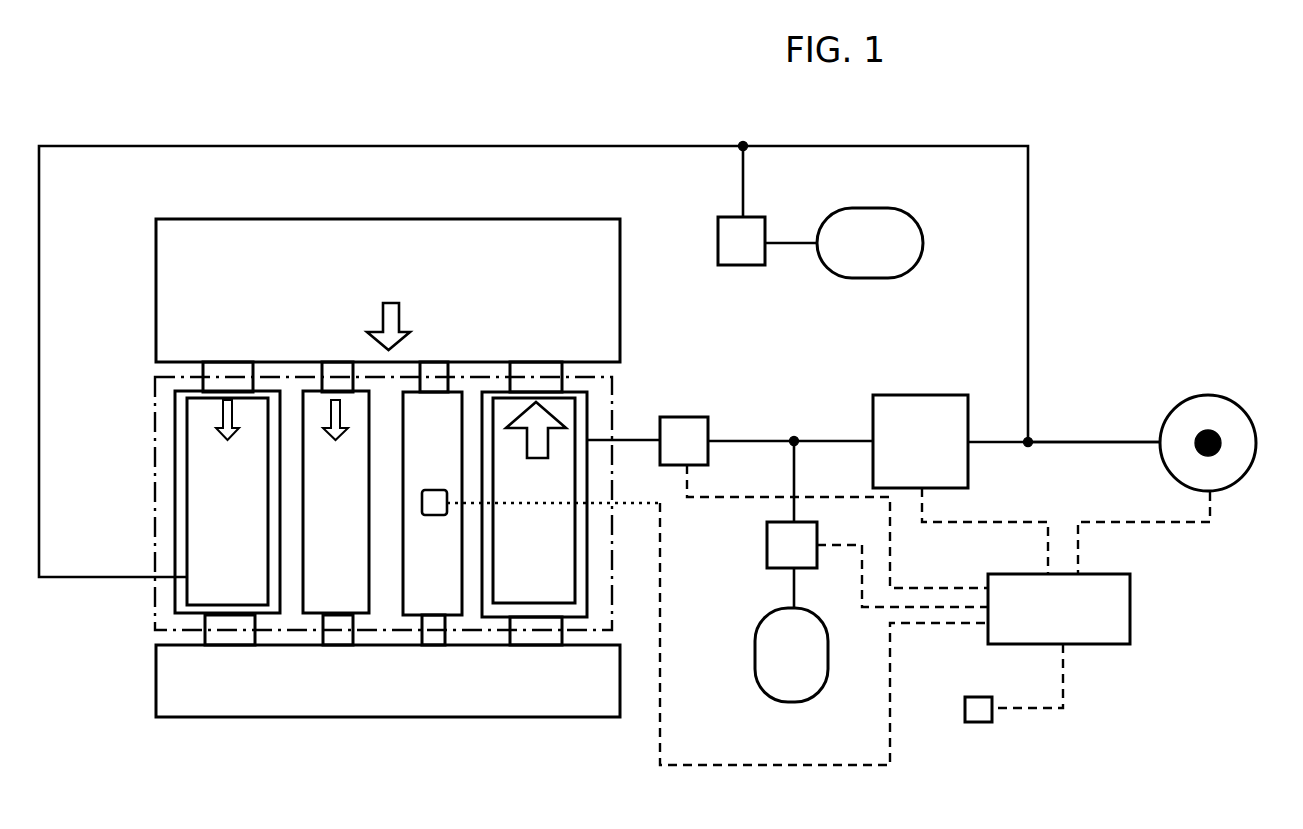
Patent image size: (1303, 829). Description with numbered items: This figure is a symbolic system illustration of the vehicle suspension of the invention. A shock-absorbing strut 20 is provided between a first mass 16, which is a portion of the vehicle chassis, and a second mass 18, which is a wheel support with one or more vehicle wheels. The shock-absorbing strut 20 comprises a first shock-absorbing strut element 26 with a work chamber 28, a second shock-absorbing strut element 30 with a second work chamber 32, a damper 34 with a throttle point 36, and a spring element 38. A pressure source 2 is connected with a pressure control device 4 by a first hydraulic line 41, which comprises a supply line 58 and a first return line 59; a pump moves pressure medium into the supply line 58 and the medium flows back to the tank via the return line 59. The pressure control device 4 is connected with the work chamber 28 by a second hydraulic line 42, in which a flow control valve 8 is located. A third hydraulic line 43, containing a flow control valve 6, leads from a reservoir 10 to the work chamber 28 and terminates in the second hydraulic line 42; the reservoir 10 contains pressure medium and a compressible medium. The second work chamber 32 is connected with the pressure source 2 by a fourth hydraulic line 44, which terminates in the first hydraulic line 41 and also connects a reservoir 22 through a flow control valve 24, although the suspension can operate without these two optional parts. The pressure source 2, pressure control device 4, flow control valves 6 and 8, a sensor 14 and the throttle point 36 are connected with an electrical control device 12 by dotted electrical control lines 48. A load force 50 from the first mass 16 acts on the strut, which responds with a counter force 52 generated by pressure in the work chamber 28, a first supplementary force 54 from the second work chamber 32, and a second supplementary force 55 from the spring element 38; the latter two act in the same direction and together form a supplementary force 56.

The pressure source 2 is at (1230, 410).
The pressure control device 4 is at (930, 405).
The flow control valve 6 is at (783, 545).
The flow control valve 8 is at (685, 422).
The reservoir 10 is at (780, 632).
The control device 12 is at (1113, 622).
The sensor 14 is at (977, 712).
The first mass 16 is at (287, 241).
The second mass 18 is at (250, 696).
The shock-absorbing strut 20 is at (152, 393).
The reservoir 22 is at (883, 223).
The flow control valve 24 is at (730, 236).
The first shock-absorbing strut element 26 is at (588, 597).
The work chamber 28 is at (576, 536).
The second shock-absorbing strut element 30 is at (175, 545).
The second work chamber 32 is at (196, 494).
The damper 34 is at (447, 586).
The throttle point 36 is at (436, 490).
The spring element 38 is at (350, 584).
The first hydraulic line 41 is at (1061, 436).
The second hydraulic line 42 is at (818, 439).
The third hydraulic line 43 is at (793, 482).
The fourth hydraulic line 44 is at (609, 121).
The electrical control lines 48 is at (766, 768).
The load force 50 is at (392, 313).
The counter force 52 is at (538, 458).
The first supplementary force 54 is at (226, 443).
The second supplementary force 55 is at (335, 442).
The supplementary force 56 is at (285, 508).
The supply line 58 is at (1094, 466).
The first return line 59 is at (1048, 446).